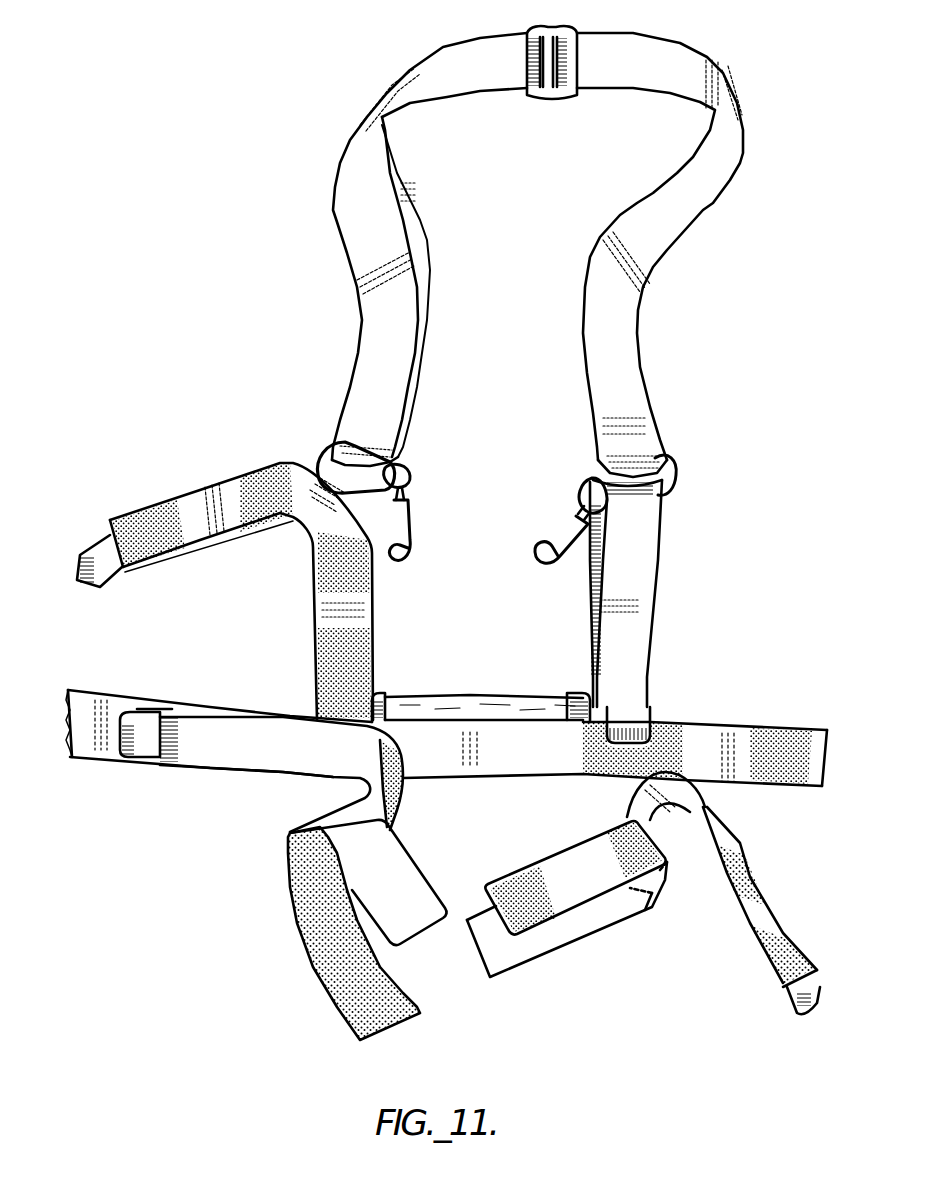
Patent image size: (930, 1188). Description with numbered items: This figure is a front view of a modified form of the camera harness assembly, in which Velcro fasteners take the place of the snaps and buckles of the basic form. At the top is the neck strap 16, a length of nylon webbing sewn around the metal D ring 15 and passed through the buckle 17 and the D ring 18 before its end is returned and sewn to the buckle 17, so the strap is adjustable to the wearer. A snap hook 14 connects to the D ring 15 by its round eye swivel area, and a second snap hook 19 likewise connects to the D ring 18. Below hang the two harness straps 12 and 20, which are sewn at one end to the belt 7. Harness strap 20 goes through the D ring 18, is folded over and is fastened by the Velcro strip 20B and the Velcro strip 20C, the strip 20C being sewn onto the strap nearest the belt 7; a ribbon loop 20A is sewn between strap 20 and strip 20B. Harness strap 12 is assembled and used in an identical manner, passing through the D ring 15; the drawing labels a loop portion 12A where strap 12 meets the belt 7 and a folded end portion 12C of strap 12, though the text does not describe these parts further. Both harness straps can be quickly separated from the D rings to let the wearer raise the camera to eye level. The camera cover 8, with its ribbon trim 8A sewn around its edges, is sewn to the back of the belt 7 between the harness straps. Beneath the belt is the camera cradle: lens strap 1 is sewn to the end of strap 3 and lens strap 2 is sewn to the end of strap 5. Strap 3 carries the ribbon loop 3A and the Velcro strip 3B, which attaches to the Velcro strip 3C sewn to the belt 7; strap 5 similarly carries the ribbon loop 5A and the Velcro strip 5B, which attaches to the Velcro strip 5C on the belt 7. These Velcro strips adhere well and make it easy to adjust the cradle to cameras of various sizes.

The lens strap 1 is at (405, 866).
The lens strap 2 is at (563, 857).
The strap 3 is at (325, 776).
The ribbon loop 3A is at (160, 712).
The Velcro strip 3B is at (408, 794).
The Velcro strip 3C is at (160, 767).
The strap 5 is at (630, 787).
The ribbon loop 5A is at (786, 992).
The Velcro strip 5B is at (758, 884).
The Velcro strip 5C is at (740, 730).
The belt 7 is at (100, 697).
The camera cover 8 is at (466, 707).
The ribbon trim 8A is at (390, 697).
The harness strap 12 is at (645, 591).
The chest strap loop 12A is at (650, 718).
The chest strap folded end 12C is at (590, 582).
The snap hook 14 is at (580, 487).
The D ring 15 is at (667, 485).
The neck strap 16 is at (470, 53).
The buckle 17 is at (566, 33).
The D ring 18 is at (330, 446).
The snap hook 19 is at (410, 478).
The harness strap 20 is at (312, 532).
The ribbon loop 20A is at (104, 558).
The Velcro strip 20B is at (204, 497).
The Velcro strip 20C is at (368, 590).